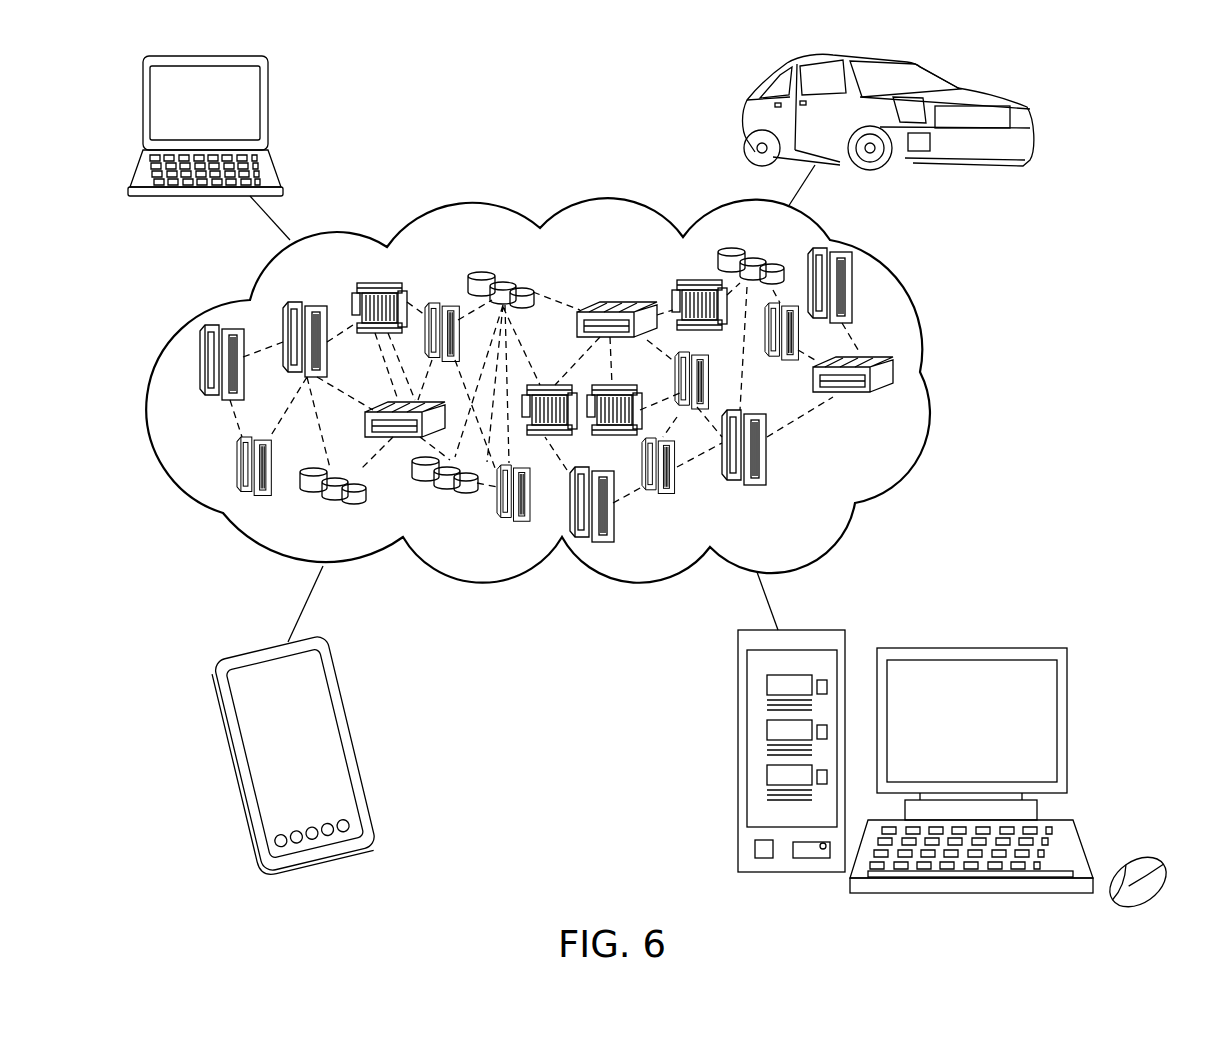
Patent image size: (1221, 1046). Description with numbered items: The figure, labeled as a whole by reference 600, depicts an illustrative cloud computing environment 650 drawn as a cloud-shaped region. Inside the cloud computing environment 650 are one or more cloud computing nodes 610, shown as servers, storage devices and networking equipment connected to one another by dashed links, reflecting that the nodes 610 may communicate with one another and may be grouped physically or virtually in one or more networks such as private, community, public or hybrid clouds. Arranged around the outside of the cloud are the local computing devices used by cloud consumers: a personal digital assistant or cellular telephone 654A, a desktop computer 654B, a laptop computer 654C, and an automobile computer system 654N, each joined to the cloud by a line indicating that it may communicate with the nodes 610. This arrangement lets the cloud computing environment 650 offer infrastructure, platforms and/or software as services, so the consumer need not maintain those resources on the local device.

The cloud computing system 600 is at (1196, 63).
The cloud computing environment 650 is at (921, 323).
The cloud computing nodes 610 is at (858, 450).
The personal digital assistant (PDA) or cellular telephone 654A is at (233, 784).
The desktop computer 654B is at (1067, 697).
The laptop computer 654C is at (270, 92).
The automobile computer system 654N is at (775, 78).